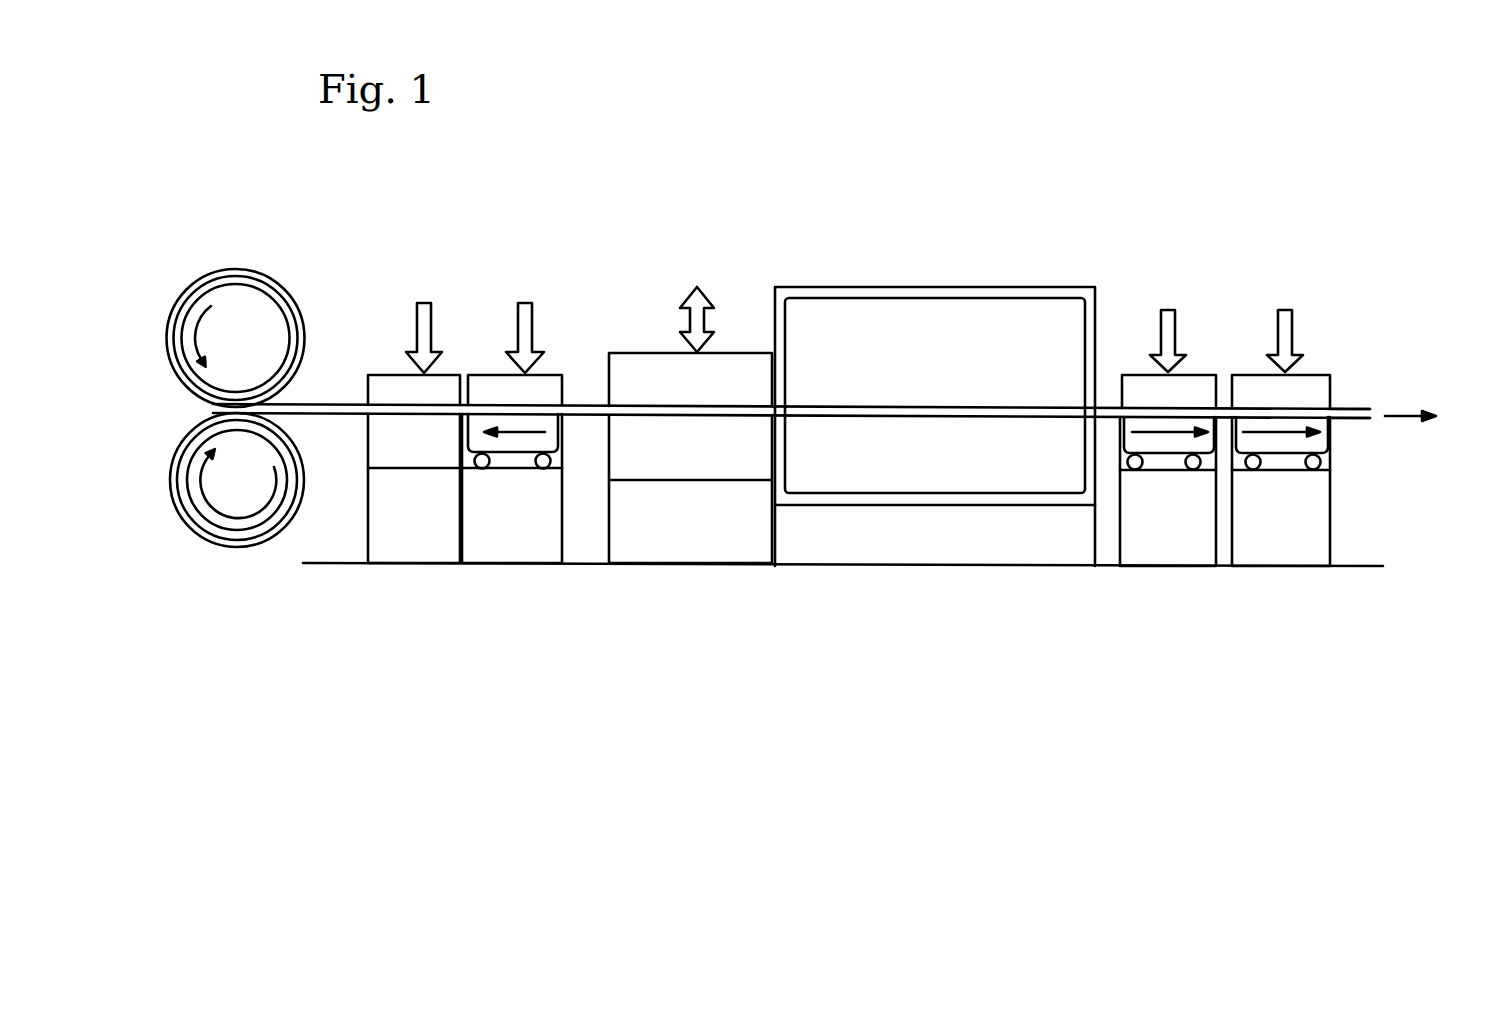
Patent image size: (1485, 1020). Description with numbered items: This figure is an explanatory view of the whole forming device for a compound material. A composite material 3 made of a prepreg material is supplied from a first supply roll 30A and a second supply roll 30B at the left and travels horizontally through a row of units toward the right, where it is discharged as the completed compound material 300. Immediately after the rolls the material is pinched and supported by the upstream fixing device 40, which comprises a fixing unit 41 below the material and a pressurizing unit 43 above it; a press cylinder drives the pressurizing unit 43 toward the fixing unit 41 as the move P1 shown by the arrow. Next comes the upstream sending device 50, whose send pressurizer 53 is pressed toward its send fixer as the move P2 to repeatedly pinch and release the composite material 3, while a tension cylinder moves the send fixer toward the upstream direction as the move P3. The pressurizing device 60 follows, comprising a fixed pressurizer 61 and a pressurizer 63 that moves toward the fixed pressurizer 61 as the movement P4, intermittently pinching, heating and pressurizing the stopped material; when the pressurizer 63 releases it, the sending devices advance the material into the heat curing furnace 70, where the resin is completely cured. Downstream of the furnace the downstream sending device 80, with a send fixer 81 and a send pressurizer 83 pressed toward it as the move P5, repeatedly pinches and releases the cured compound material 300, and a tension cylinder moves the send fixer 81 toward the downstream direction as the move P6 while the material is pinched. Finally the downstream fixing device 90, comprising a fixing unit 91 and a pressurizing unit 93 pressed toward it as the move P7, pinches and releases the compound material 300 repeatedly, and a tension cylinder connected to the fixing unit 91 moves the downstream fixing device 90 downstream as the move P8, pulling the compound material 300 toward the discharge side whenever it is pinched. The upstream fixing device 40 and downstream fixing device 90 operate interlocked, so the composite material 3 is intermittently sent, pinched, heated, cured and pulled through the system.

The composite material 3 is at (312, 400).
The first supply roll 30A is at (241, 264).
The second supply roll 30B is at (239, 553).
The upstream fixing device 40 is at (397, 349).
The fixing unit 41 is at (383, 512).
The pressurizing unit 43 is at (383, 387).
The upstream sending device 50 is at (511, 350).
The send pressurizer 53 is at (542, 388).
The pressurizing device 60 is at (731, 348).
The fixed pressurizer 61 is at (702, 468).
The pressurizer 63 is at (657, 370).
The heat curing furnace 70 is at (920, 308).
The downstream sending device 80 is at (1196, 358).
The send fixer 81 is at (1170, 445).
The send pressurizer 83 is at (1147, 387).
The downstream fixing device 90 is at (1321, 361).
The fixing unit 91 is at (1322, 437).
The pressurizing unit 93 is at (1253, 387).
The completed compound material 300 is at (1381, 389).
The pressurizing movement of upstream fixing device P1 is at (420, 317).
The pressurizing movement of upstream sending device P2 is at (524, 319).
The upstream tension movement P3 is at (503, 434).
The pressurizing movement of pressurizing device P4 is at (699, 307).
The pressurizing movement of downstream sending device P5 is at (1164, 320).
The downstream tension movement of sending device P6 is at (1157, 436).
The pressurizing movement of downstream fixing device P7 is at (1284, 320).
The downstream tension movement of fixing device P8 is at (1275, 436).